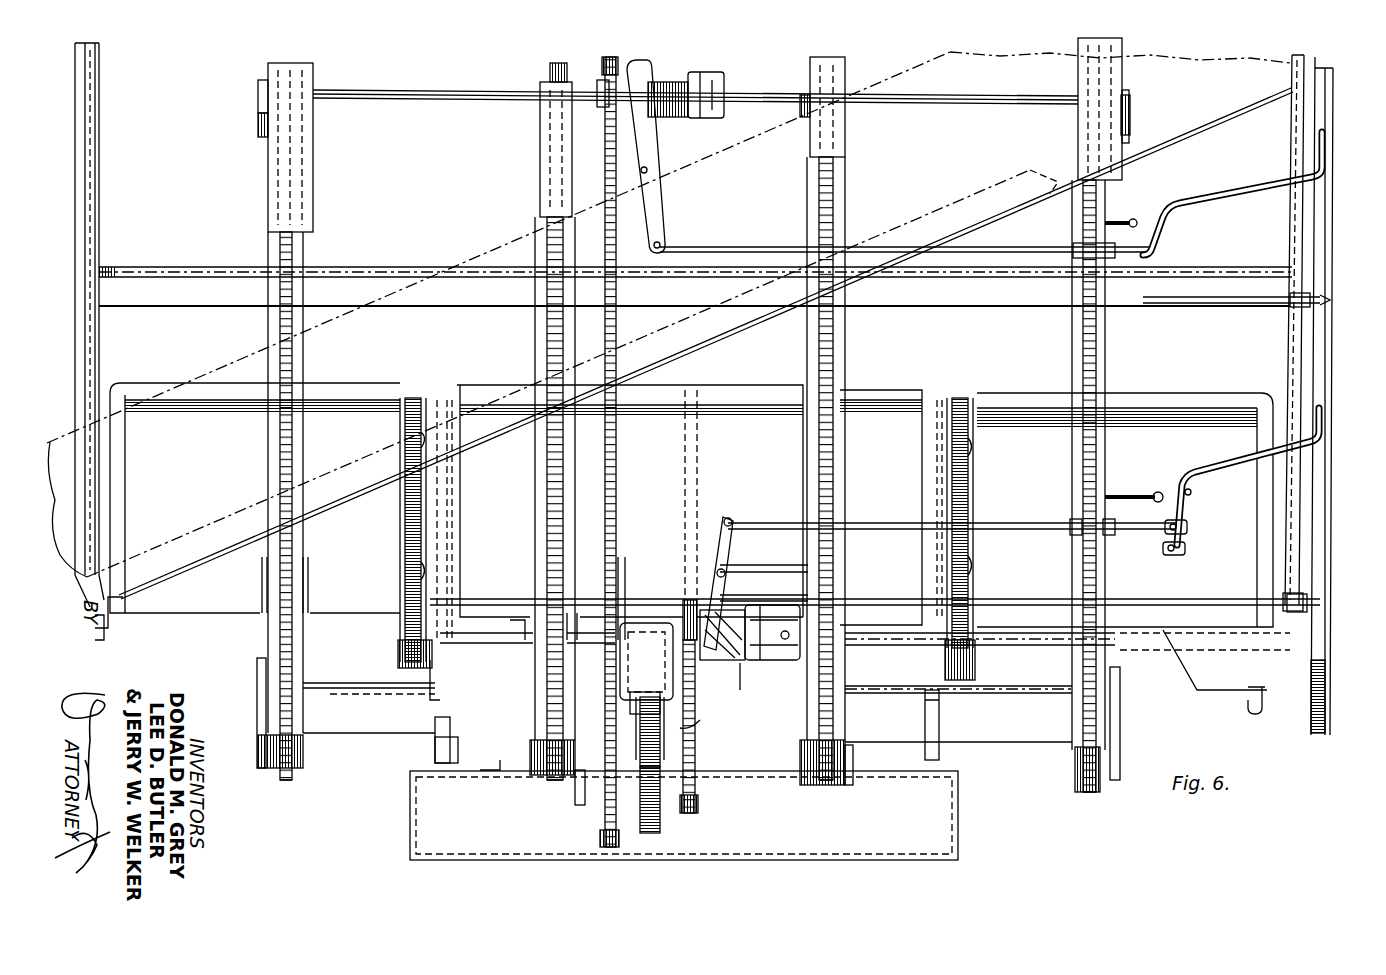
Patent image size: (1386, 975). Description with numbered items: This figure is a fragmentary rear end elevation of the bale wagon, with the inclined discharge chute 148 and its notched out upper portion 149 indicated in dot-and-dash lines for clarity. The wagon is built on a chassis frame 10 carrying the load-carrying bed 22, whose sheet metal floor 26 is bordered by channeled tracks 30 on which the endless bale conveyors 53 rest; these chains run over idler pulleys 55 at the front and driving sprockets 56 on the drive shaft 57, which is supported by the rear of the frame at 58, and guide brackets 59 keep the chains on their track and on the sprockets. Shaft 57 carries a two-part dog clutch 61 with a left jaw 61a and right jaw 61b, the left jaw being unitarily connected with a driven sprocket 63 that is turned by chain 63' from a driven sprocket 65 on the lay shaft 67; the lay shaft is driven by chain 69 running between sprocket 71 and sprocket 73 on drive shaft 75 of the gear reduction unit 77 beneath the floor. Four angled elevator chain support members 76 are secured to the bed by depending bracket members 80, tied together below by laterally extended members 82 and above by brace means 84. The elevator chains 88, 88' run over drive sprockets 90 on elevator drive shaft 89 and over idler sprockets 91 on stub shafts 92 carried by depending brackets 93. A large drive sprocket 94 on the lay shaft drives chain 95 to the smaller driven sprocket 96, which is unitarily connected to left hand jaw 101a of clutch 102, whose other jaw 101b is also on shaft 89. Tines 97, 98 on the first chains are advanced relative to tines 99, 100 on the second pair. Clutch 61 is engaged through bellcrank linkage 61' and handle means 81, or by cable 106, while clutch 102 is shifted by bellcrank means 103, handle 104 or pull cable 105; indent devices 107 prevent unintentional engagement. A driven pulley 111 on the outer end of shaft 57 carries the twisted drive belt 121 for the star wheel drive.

The chassis frame 10 is at (410, 820).
The load-carrying bed 22 is at (137, 381).
The sheet metal floor 26 is at (255, 498).
The channeled track 30 is at (450, 527).
The bale conveyor 53 is at (410, 515).
The idler pulley 55 is at (400, 476).
The driving sprocket 56 is at (450, 578).
The drive shaft 57 is at (515, 630).
The frame support 58 is at (440, 700).
The guide bracket 59 is at (410, 445).
The dog clutch 61 is at (753, 688).
The left jaw 61a is at (712, 665).
The right jaw 61b is at (745, 662).
The bellcrank linkage 61' is at (954, 510).
The driven sprocket 63 is at (720, 583).
The chain 63' is at (734, 727).
The driven sprocket 65 is at (697, 810).
The lay shaft 67 is at (697, 785).
The chain 69 is at (660, 738).
The sprocket 71 is at (690, 766).
The sprocket 73 is at (660, 697).
The drive shaft 75 is at (633, 690).
The elevator chain support member 76 is at (312, 374).
The gear reduction unit 77 is at (488, 770).
The depending bracket member 80 is at (435, 740).
The handle means 81 is at (1190, 474).
The laterally extended member 82 is at (338, 690).
The brace means 84 is at (368, 267).
The elevator conveyor chain 88 is at (421, 498).
The elevator conveyor chain 88' is at (956, 474).
The elevator drive shaft 89 is at (935, 100).
The drive sprocket 90 is at (556, 63).
The idler sprocket 91 is at (283, 780).
The stub shaft 92 is at (305, 755).
The depending bracket 93 is at (258, 680).
The drive sprocket 94 is at (610, 845).
The driven chain 95 is at (612, 470).
The driven sprocket 96 is at (610, 57).
The tine 97 is at (315, 188).
The tine 98 is at (540, 190).
The tine 99 is at (810, 75).
The tine 100 is at (1077, 90).
The left hand jaw 101a is at (655, 85).
The jaw 101b is at (700, 72).
The clutch 102 is at (661, 128).
The bellcrank means 103 is at (708, 247).
The handle 104 is at (1232, 185).
The pull cable 105 is at (1180, 303).
The cable 106 is at (1225, 600).
The indent device 107 is at (1135, 218).
The driven pulley 111 is at (1310, 728).
The drive belt 121 is at (1187, 527).
The discharge chute 148 is at (1000, 222).
The notched out upper portion 149 is at (1052, 178).